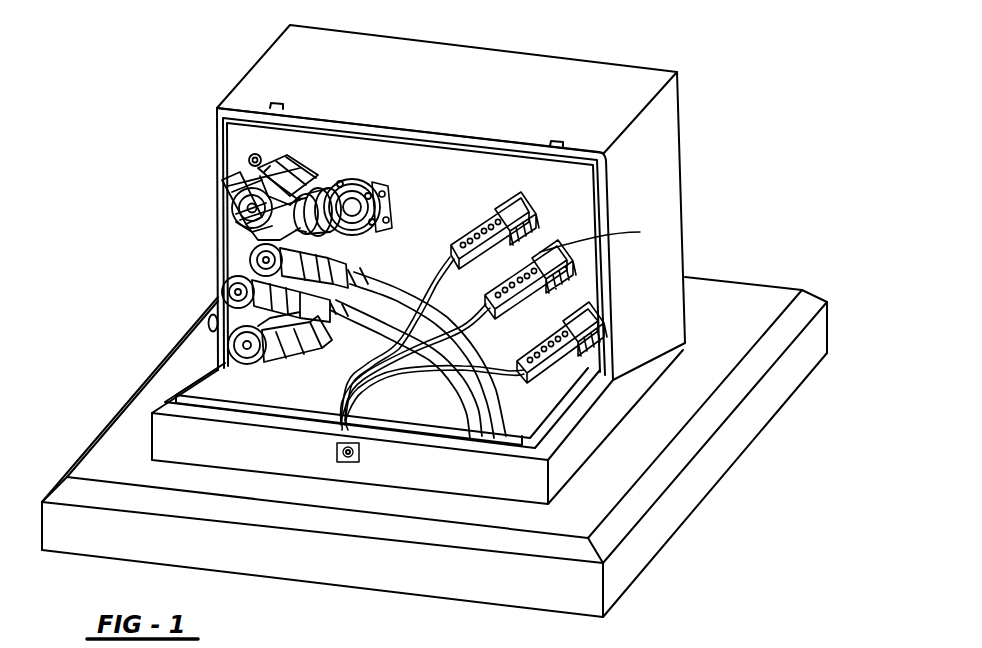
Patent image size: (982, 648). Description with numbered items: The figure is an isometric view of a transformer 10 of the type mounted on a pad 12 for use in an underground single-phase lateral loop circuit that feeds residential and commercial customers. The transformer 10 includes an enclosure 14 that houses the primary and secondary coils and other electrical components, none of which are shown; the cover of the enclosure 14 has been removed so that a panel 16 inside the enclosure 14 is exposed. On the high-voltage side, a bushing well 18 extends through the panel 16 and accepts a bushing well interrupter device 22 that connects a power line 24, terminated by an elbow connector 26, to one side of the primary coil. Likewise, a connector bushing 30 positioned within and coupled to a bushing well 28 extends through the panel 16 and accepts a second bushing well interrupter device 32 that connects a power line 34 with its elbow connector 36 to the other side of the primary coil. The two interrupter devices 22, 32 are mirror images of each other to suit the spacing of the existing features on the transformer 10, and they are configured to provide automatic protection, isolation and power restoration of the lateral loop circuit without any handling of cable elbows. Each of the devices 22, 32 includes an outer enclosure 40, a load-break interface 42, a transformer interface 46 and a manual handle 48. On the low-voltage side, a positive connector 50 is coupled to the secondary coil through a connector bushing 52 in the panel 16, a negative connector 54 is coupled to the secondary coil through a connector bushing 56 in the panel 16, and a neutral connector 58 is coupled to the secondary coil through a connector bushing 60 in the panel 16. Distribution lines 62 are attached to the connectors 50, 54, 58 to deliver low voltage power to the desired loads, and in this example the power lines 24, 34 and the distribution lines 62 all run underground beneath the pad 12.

The transformer 10 is at (738, 84).
The pad 12 is at (786, 382).
The enclosure 14 is at (267, 80).
The panel 16 is at (477, 188).
The bushing well 18 is at (793, 645).
The bushing well interrupter device 22 is at (213, 293).
The power line 24 is at (463, 403).
The elbow connector 26 is at (321, 335).
The bushing well 28 is at (362, 214).
The connector bushing 30 is at (340, 188).
The bushing well interrupter device 32 is at (210, 192).
The power line 34 is at (395, 292).
The elbow connector 36 is at (332, 258).
The outer enclosure 40 is at (292, 175).
The load-break interface 42 is at (262, 234).
The transformer interface 46 is at (383, 217).
The manual handle 48 is at (208, 323).
The 120 V positive connector 50 is at (507, 212).
The connector bushing 52 is at (532, 218).
The 120 V negative connector 54 is at (565, 255).
The connector bushing 56 is at (560, 268).
The neutral connector 58 is at (572, 316).
The connector bushing 60 is at (582, 331).
The distribution lines 62 is at (533, 387).